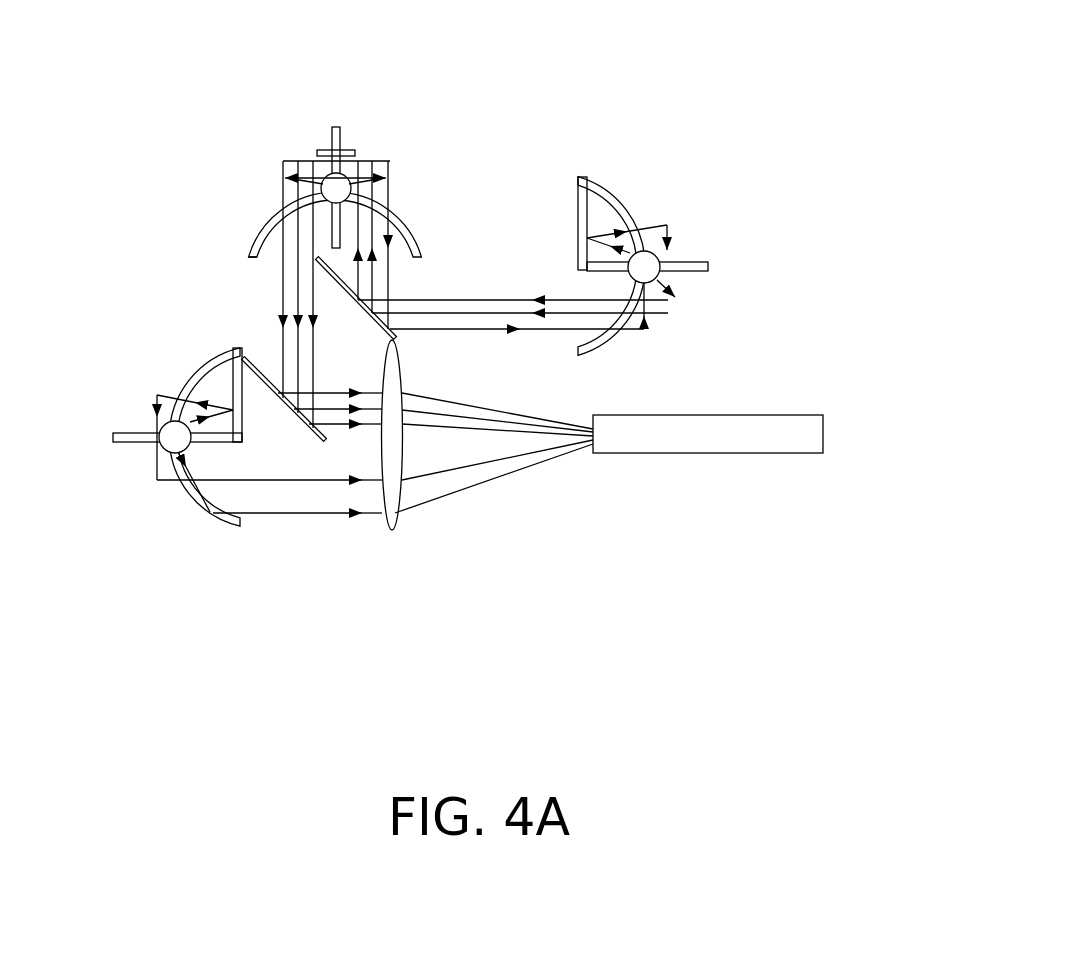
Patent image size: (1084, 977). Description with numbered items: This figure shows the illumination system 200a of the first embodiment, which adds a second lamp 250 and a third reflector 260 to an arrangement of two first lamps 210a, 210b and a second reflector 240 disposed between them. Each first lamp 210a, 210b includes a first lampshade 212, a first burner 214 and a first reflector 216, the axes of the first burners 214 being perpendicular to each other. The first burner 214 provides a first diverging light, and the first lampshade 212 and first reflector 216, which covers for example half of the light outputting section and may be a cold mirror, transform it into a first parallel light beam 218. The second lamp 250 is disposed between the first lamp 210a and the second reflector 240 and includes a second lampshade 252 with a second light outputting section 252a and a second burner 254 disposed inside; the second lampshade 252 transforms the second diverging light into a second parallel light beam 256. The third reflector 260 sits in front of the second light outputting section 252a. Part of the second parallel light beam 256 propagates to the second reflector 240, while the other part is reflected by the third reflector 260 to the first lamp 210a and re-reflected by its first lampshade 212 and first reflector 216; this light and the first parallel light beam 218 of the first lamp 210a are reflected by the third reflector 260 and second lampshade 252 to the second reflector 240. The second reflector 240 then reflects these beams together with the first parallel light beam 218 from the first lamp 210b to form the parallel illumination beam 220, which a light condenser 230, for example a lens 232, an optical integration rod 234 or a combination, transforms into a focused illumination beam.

The illumination system 200a is at (515, 697).
The second lamp 250 is at (330, 57).
The second lampshade 252 is at (268, 188).
The second light outputting section 252a is at (264, 256).
The second burner 254 is at (323, 182).
The second parallel light beam 256 is at (282, 283).
The third reflector 260 is at (397, 338).
The first lamp 210a is at (806, 120).
The first lampshade 212 is at (650, 202).
The first burner 214 is at (670, 257).
The first reflector 216 is at (637, 188).
The first parallel light beam 218 is at (542, 290).
The second reflector 240 is at (262, 356).
The first lamp 210b is at (132, 522).
The parallel illumination beam 220 is at (373, 523).
The light condenser 230 is at (580, 573).
The lens 232 is at (390, 496).
The optical integration rod 234 is at (623, 442).